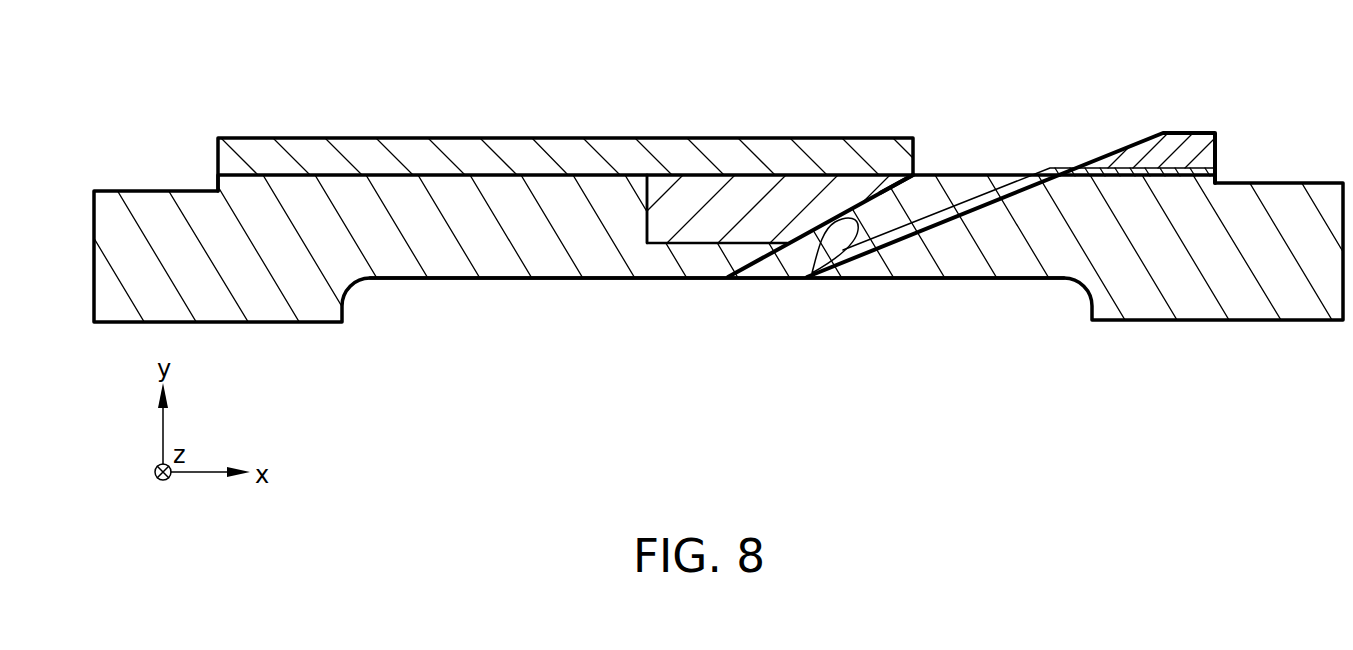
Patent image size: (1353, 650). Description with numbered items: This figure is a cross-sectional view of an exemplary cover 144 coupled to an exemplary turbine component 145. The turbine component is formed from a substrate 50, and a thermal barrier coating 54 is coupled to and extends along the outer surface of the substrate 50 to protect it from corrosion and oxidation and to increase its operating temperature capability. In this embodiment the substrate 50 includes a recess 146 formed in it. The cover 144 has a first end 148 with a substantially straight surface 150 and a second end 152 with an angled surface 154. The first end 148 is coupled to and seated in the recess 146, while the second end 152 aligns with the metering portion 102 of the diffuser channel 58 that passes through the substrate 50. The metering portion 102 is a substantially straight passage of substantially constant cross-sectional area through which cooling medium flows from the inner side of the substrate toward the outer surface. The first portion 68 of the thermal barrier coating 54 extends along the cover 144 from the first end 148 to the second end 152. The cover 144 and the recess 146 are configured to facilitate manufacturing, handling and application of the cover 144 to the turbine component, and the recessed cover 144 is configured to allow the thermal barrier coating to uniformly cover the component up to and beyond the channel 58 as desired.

The substrate 50 is at (513, 250).
The thermal barrier coating 54 is at (330, 148).
The diffuser channel 58 is at (920, 212).
The first portion 68 is at (498, 160).
The metering portion 102 is at (783, 247).
The cover 144 is at (830, 192).
The turbine component 145 is at (608, 270).
The recess 146 is at (728, 277).
The first end 148 is at (647, 218).
The straight surface 150 is at (665, 157).
The second end 152 is at (913, 176).
The angled surface 154 is at (877, 193).